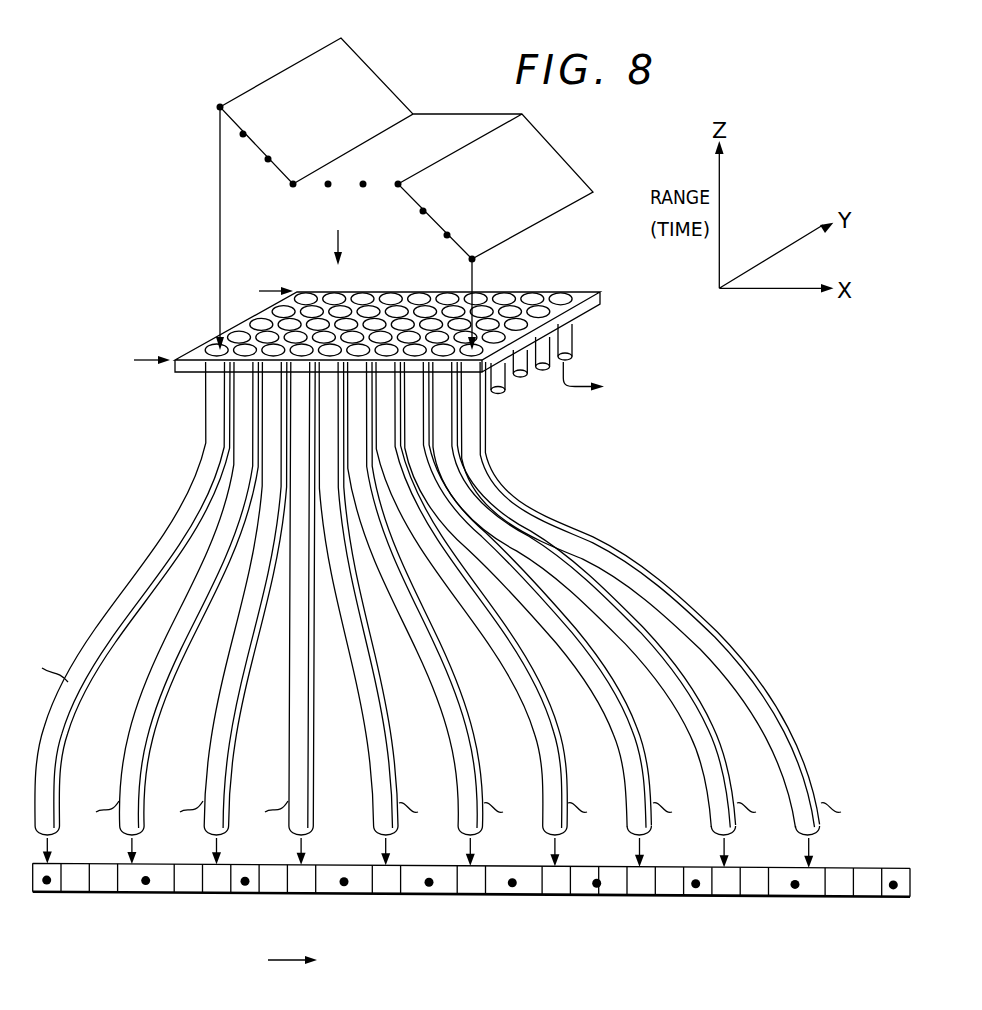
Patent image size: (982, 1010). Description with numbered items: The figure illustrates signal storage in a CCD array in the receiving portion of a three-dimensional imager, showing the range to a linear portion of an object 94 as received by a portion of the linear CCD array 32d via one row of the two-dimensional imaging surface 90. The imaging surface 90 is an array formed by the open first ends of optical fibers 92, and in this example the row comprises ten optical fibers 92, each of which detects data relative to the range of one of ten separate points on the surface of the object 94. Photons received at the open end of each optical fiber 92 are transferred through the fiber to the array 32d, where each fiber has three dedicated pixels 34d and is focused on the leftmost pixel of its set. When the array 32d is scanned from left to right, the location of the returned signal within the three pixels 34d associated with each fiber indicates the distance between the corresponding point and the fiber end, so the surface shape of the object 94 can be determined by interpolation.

The two-dimensional imaging surface 90 is at (582, 293).
The optical fibers 92 is at (108, 613).
The object 94 is at (368, 67).
The linear CCD array 32d is at (165, 945).
The pixels 34d is at (612, 886).